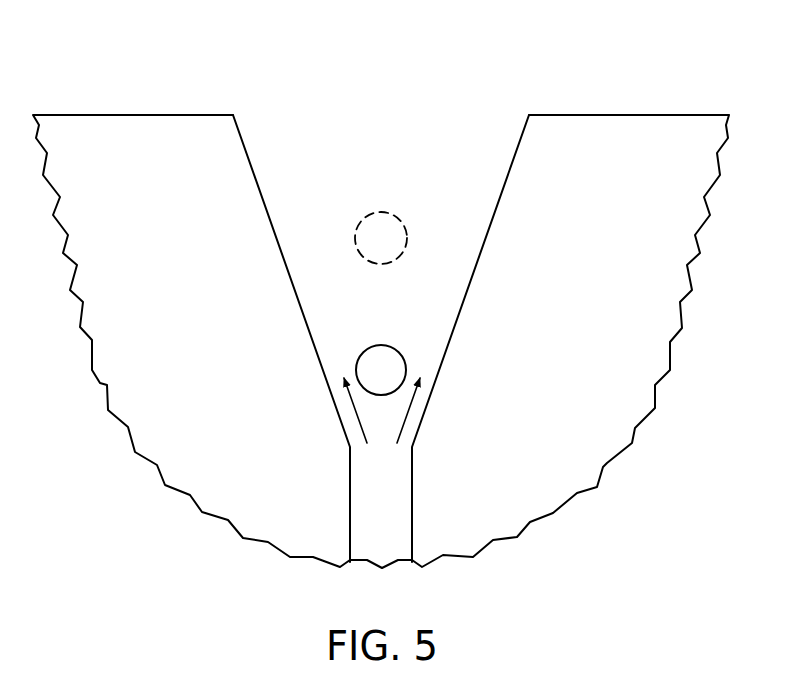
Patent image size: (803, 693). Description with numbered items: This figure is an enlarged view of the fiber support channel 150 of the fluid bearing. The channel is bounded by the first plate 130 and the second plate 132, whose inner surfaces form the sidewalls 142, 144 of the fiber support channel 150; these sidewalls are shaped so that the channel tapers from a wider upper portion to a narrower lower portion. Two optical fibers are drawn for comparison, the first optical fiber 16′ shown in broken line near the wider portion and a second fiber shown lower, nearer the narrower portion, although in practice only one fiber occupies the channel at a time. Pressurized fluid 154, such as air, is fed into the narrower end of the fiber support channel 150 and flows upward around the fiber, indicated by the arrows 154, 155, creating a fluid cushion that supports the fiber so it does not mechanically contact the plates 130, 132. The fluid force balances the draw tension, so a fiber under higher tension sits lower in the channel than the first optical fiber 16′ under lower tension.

The fiber support channel 150 is at (404, 93).
The first plate 130 is at (100, 383).
The second plate 132 is at (630, 440).
The inner surface of the first plate 142 is at (250, 157).
The inner surface of the second plate 144 is at (512, 157).
The first optical fiber 16′ is at (383, 212).
The pressurized fluid 154 is at (336, 404).
The second fluid flow 155 is at (397, 402).